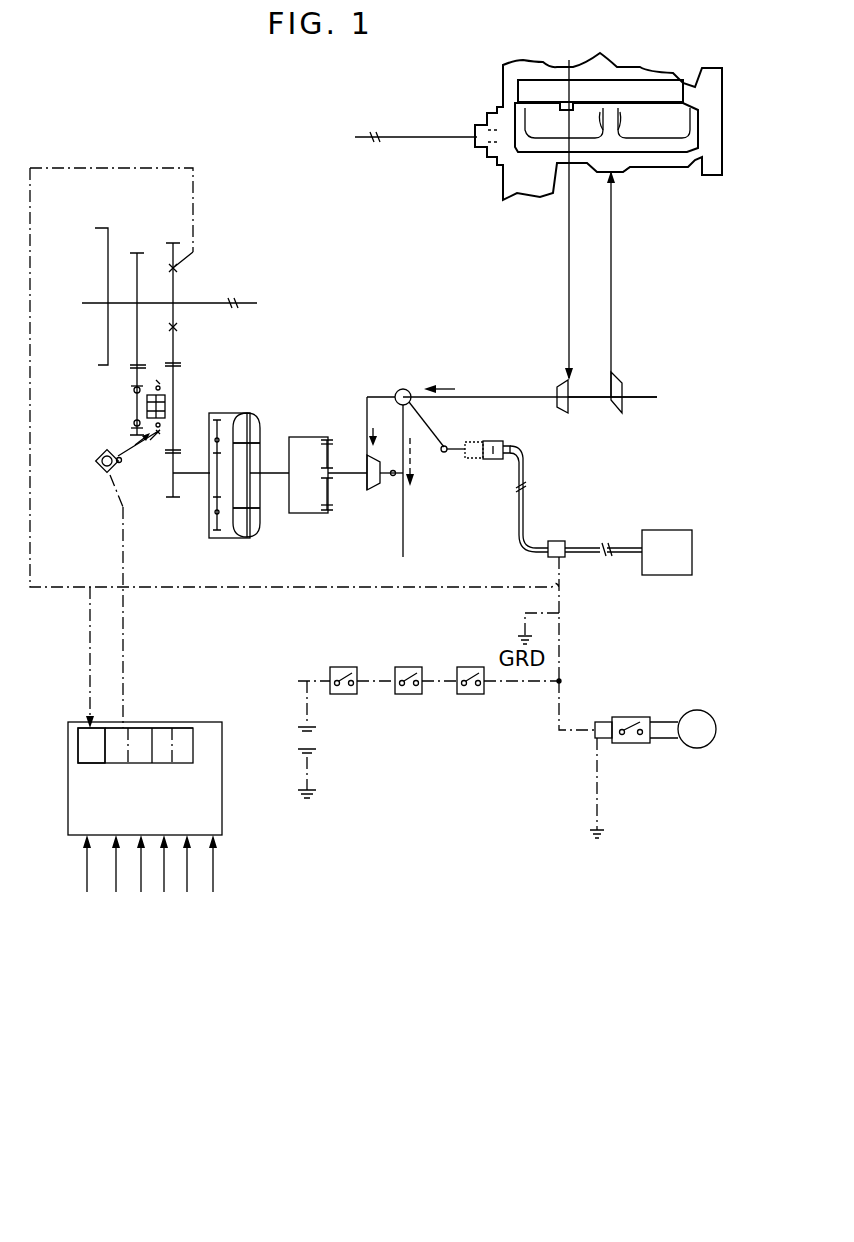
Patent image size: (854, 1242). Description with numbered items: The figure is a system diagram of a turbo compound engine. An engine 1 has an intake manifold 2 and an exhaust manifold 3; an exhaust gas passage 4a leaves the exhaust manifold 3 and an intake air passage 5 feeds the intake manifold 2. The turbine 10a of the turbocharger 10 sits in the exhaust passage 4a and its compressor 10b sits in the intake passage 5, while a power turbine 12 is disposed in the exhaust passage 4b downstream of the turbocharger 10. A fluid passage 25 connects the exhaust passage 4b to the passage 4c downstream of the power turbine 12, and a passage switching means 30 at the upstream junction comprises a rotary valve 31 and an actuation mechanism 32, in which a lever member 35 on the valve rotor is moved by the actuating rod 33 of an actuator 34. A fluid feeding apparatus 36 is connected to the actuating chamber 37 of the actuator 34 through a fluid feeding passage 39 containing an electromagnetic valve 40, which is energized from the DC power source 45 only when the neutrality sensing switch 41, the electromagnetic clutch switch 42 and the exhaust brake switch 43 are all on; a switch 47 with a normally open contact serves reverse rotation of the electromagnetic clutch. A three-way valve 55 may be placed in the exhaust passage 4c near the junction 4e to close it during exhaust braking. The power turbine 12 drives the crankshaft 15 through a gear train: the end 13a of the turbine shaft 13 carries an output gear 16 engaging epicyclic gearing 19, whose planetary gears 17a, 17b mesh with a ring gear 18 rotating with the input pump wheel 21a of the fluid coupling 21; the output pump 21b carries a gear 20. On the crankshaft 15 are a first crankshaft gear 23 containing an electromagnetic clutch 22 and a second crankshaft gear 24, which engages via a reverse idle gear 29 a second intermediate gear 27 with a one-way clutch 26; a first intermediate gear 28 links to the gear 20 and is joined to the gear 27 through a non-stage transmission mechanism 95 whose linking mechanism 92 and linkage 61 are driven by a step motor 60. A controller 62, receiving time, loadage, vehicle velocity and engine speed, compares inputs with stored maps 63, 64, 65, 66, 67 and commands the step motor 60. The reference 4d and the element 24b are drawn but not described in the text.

The engine 1 is at (610, 72).
The intake manifold 2 is at (646, 160).
The exhaust manifold 3 is at (567, 204).
The exhaust gas passage 4a is at (568, 245).
The exhaust passage 4b is at (500, 397).
The passage 4c is at (405, 505).
The throttle valve 4d is at (367, 397).
The junction 4e is at (394, 478).
The intake air passage 5 is at (618, 382).
The turbocharger 10 is at (588, 410).
The turbine 10a is at (557, 385).
The compressor 10b is at (622, 410).
The power turbine 12 is at (368, 482).
The turbine shaft 13 is at (345, 470).
The end of turbine shaft 13a is at (330, 438).
The crankshaft 15 is at (425, 137).
The output gear 16 is at (325, 470).
The planetary gear 17a is at (322, 440).
The planetary gear 17b is at (320, 512).
The ring gear 18 is at (333, 508).
The epicyclic gearing 19 is at (300, 515).
The gear 20 is at (172, 498).
The fluid coupling 21 is at (253, 412).
The input pump wheel 21a is at (242, 530).
The output pump 21b is at (236, 537).
The electromagnetic clutch 22 is at (176, 268).
The first crankshaft gear 23 is at (177, 329).
The second crankshaft gear 24 is at (140, 255).
The lamp 24b is at (700, 746).
The fluid passage 25 is at (412, 462).
The one-way clutch 26 is at (133, 392).
The second intermediate gear 27 is at (133, 424).
The first intermediate gear 28 is at (170, 405).
The reverse idle gear 29 is at (147, 362).
The passage switching means 30 is at (451, 356).
The rotary valve 31 is at (403, 389).
The actuation mechanism 32 is at (630, 522).
The actuating rod 33 is at (446, 442).
The actuator 34 is at (496, 441).
The lever member 35 is at (444, 452).
The fluid feeding apparatus 36 is at (628, 552).
The actuating chamber 37 is at (497, 460).
The fluid feeding passage 39 is at (527, 482).
The electromagnetic valve 40 is at (558, 541).
The neutrality sensing switch 41 is at (352, 662).
The electromagnetic clutch switch 42 is at (477, 662).
The exhaust brake switch 43 is at (416, 662).
The DC power source 45 is at (312, 740).
The switch for reverse rotation of the electromagnetic clutch 47 is at (630, 717).
The three-way valve 55 is at (382, 423).
The step motor 60 is at (98, 468).
The linkage 61 is at (129, 468).
The controller 62 is at (145, 947).
The map 63 is at (90, 728).
The map 64 is at (113, 728).
The map 65 is at (140, 728).
The map 66 is at (163, 728).
The map 67 is at (185, 728).
The linking mechanism 92 is at (160, 440).
The non-stage transmission mechanism 95 is at (170, 390).